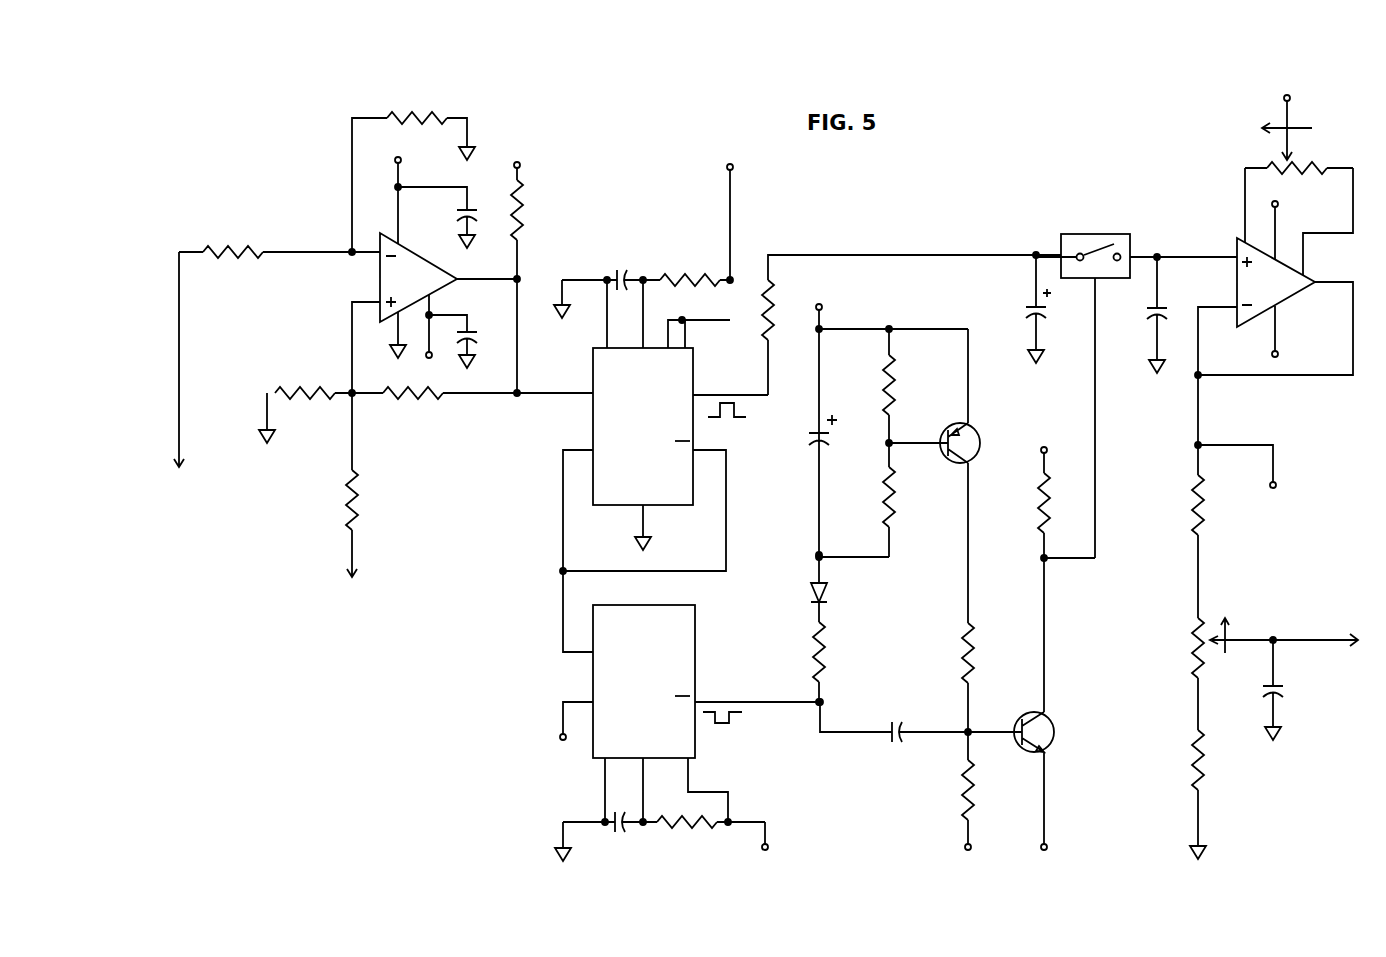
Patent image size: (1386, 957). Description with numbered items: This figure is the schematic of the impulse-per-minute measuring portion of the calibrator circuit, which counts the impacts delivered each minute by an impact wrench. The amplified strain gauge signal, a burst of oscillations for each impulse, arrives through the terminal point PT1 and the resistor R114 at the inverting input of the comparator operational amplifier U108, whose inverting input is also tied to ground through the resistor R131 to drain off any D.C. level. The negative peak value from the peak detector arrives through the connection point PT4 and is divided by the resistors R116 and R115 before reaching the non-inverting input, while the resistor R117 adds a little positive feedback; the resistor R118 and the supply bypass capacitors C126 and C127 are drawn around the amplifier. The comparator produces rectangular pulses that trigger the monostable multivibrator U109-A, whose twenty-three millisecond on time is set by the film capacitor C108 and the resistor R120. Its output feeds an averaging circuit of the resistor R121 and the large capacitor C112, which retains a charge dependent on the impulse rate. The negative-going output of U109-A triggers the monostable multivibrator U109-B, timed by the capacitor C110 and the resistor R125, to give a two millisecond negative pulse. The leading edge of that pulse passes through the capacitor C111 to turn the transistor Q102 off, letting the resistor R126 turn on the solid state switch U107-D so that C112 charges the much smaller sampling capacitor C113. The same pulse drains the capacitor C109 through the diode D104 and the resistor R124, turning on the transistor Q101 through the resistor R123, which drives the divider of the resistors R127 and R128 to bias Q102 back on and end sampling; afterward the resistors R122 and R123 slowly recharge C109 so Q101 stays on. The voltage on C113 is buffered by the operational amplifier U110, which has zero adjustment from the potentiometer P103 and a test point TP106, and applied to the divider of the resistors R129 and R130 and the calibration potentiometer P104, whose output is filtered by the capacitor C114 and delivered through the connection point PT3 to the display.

The resistor R114 is at (267, 239).
The terminal point PT1 is at (226, 380).
The resistor R131 is at (413, 169).
The comparator operational amplifier U108 is at (434, 263).
The capacitor C126 is at (437, 217).
The capacitor C127 is at (479, 337).
The resistor R118 is at (540, 205).
The resistor R115 is at (305, 415).
The resistor R117 is at (472, 406).
The resistor R116 is at (384, 485).
The connection point PT4 is at (371, 590).
The monostable multivibrator U109-A is at (676, 391).
The capacitor C108 is at (600, 269).
The resistor R120 is at (687, 267).
The resistor R121 is at (911, 323).
The monostable multivibrator U109-B is at (672, 713).
The capacitor C110 is at (607, 836).
The resistor R125 is at (732, 838).
The capacitor C111 is at (921, 715).
The capacitor C109 is at (823, 426).
The diode D104 is at (835, 588).
The resistor R124 is at (851, 629).
The resistor R122 is at (893, 386).
The resistor R123 is at (919, 500).
The transistor Q101 is at (987, 476).
The resistor R127 is at (998, 677).
The resistor R128 is at (939, 796).
The resistor R126 is at (1042, 491).
The transistor Q102 is at (1070, 709).
The solid state switch U107-D is at (1136, 383).
The capacitor C112 is at (1018, 309).
The sampling capacitor C113 is at (1151, 338).
The operational amplifier U110 is at (1274, 298).
The potentiometer P103 is at (1263, 163).
The resistor R129 is at (1170, 496).
The test point TP106 is at (1257, 482).
The potentiometer P104 is at (1204, 673).
The connection point PT3 is at (1329, 664).
The capacitor C114 is at (1248, 690).
The resistor R130 is at (1228, 794).